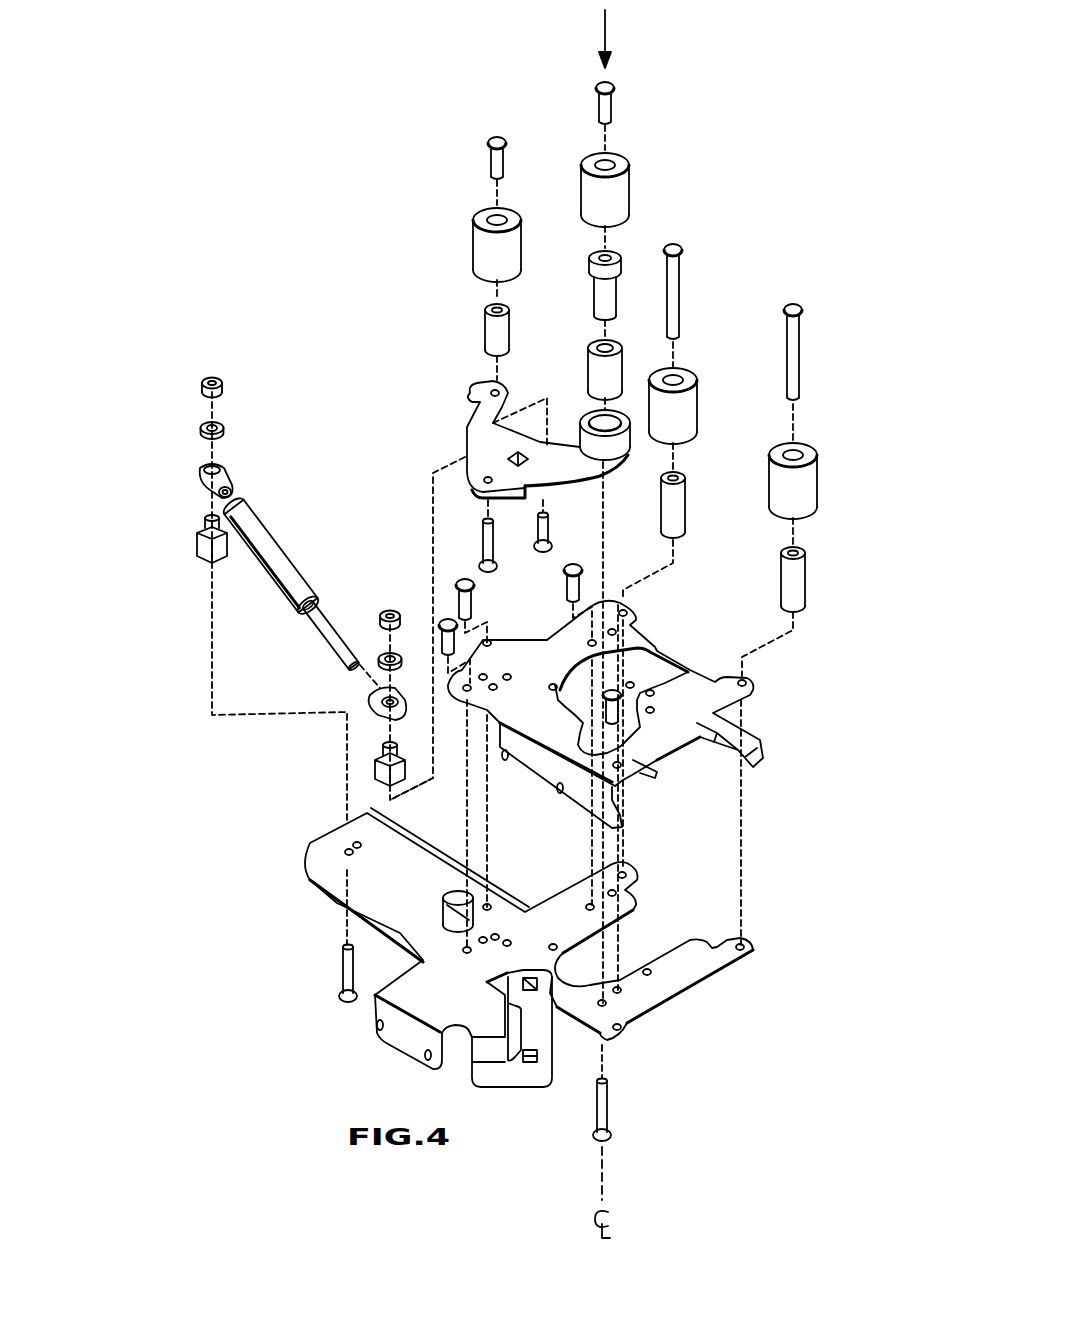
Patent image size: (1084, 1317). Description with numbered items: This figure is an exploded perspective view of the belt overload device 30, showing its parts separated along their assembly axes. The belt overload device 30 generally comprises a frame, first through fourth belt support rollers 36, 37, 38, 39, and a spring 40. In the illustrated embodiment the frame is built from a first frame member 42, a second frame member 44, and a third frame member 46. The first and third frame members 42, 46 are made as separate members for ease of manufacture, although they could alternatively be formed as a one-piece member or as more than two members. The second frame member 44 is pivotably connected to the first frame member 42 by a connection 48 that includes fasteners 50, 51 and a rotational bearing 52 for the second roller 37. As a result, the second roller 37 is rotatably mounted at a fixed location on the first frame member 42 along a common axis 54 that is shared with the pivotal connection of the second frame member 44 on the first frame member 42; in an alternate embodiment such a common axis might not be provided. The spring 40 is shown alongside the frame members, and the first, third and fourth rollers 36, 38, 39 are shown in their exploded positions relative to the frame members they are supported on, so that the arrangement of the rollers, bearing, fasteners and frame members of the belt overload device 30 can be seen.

The belt overload device 30 is at (322, 100).
The first belt support roller 36 is at (472, 240).
The second belt support roller 37 is at (631, 197).
The third belt support roller 38 is at (699, 412).
The fourth belt support roller 39 is at (819, 482).
The spring 40 is at (290, 556).
The first frame member 42 is at (308, 866).
The second frame member 44 is at (473, 422).
The third frame member 46 is at (753, 690).
The connection 48 is at (606, 44).
The fastener 50 is at (611, 109).
The fastener 51 is at (608, 1106).
The rotational bearing 52 is at (618, 293).
The common axis 54 is at (601, 1176).